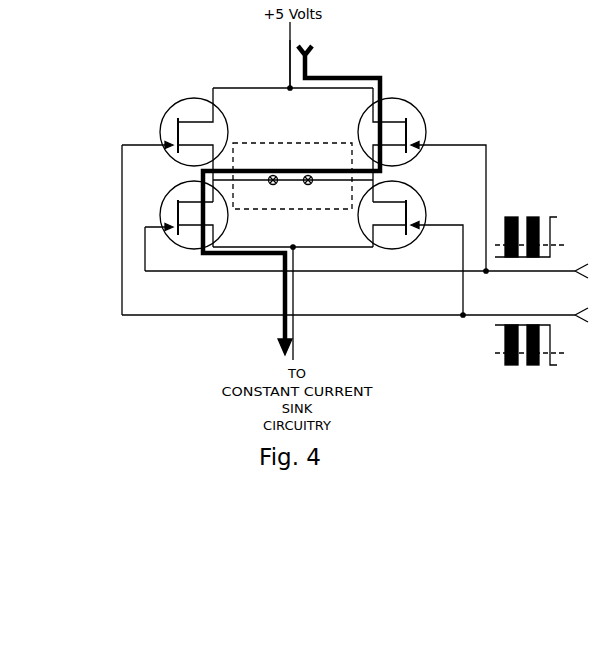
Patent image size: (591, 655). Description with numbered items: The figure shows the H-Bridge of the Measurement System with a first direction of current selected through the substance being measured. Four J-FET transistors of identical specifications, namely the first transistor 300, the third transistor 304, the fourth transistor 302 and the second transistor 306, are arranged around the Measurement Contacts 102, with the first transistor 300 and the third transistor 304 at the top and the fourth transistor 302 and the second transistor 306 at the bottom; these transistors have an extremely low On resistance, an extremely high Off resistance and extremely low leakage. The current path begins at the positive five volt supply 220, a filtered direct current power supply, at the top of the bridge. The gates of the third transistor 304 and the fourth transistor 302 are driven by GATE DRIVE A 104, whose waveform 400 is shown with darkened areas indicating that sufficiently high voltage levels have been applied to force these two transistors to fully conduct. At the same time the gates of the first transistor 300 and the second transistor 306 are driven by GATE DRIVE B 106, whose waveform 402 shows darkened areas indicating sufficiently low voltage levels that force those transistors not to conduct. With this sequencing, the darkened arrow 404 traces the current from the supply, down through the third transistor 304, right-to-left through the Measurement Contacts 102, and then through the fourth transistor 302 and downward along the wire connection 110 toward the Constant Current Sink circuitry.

The transistor Q1 300 is at (174, 126).
The transistor Q4 302 is at (172, 206).
The transistor Q3 304 is at (415, 130).
The transistor Q2 306 is at (413, 207).
The Measurement Contacts 102 is at (287, 143).
The +5 Volts 220 is at (288, 78).
The darkened arrow 404 is at (325, 73).
The wire connection 110 is at (297, 328).
The GATE DRIVE A 104 is at (543, 273).
The GATE DRIVE B 106 is at (530, 313).
The GATE DRIVE A waveform 400 is at (539, 215).
The GATE DRIVE B waveform 402 is at (537, 368).